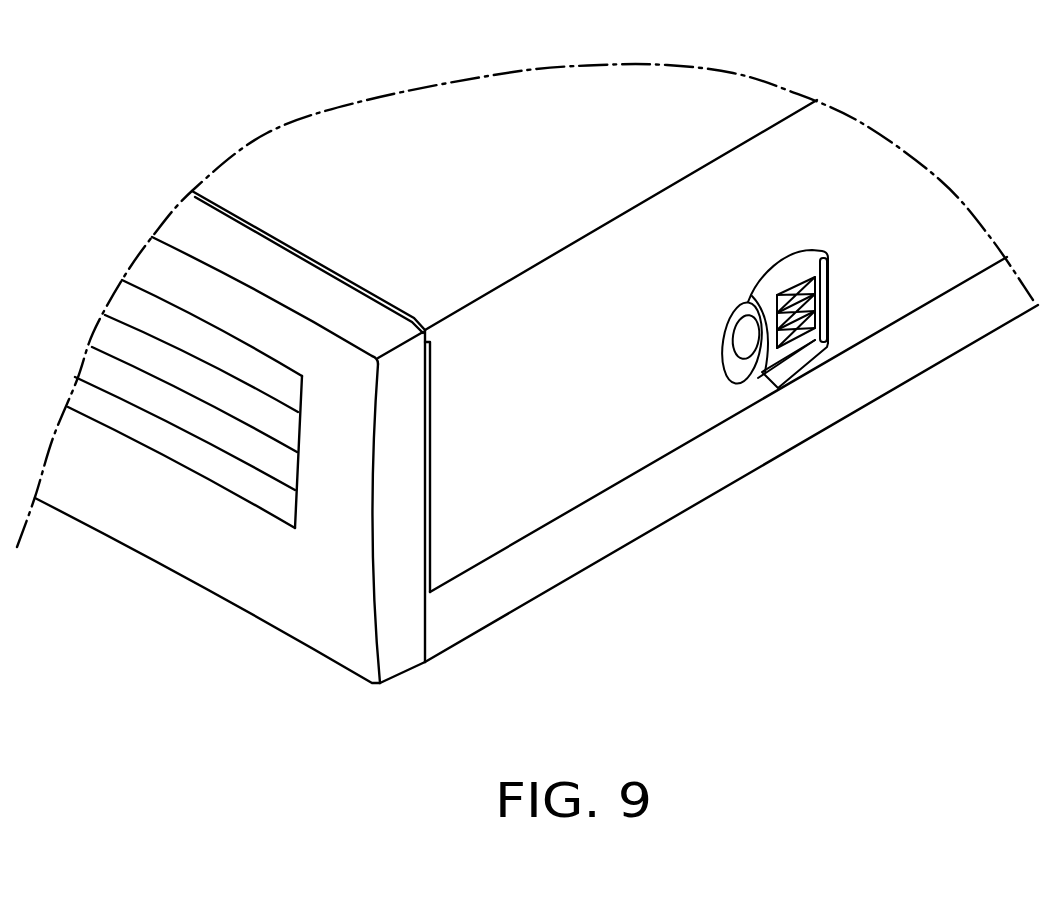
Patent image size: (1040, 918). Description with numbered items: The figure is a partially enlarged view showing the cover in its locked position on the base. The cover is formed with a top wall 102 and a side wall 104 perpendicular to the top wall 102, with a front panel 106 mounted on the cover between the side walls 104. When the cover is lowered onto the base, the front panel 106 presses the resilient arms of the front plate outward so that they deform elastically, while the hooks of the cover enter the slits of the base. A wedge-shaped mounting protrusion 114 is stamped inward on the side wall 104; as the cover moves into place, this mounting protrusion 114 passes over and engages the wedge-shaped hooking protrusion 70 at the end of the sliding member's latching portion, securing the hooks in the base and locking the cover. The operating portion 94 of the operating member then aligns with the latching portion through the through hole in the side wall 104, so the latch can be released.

The top wall 102 is at (410, 145).
The side wall 104 is at (540, 427).
The front panel 106 is at (187, 530).
The hooking protrusion 70 is at (824, 281).
The operating portion 94 is at (740, 342).
The mounting protrusion 114 is at (832, 277).